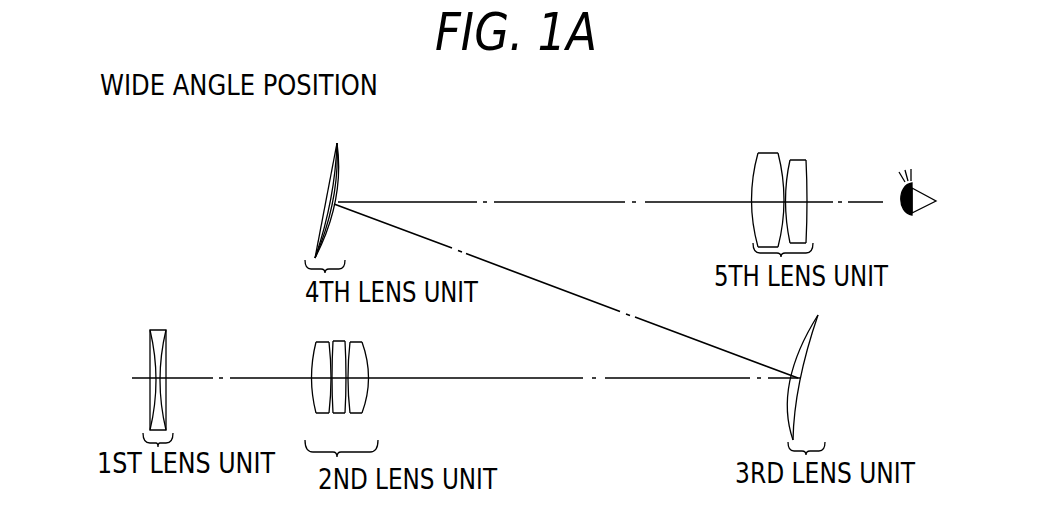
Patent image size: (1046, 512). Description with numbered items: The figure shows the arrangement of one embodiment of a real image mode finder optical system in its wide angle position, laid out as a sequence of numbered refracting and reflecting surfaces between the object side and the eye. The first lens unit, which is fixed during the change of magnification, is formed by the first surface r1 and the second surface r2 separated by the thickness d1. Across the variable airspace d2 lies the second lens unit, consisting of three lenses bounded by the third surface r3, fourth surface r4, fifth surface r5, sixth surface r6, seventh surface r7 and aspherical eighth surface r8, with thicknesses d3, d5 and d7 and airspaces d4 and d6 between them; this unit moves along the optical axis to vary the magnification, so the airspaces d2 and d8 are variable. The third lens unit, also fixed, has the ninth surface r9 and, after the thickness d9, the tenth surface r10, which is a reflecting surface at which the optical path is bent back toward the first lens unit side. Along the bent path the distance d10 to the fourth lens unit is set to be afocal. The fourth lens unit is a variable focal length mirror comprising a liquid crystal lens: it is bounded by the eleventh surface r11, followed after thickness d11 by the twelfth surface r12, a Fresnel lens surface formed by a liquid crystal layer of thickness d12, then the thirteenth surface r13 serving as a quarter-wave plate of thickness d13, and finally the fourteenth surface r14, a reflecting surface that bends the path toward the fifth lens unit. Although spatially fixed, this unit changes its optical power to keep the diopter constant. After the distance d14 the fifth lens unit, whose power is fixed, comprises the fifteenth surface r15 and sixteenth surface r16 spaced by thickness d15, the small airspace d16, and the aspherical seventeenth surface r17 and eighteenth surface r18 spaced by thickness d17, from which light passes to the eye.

The first surface r1 is at (150, 357).
The second surface r2 is at (167, 353).
The third surface r3 is at (312, 370).
The fourth surface r4 is at (328, 362).
The fifth surface r5 is at (336, 348).
The sixth surface r6 is at (348, 355).
The seventh surface r7 is at (360, 357).
The eighth surface r8 is at (373, 367).
The ninth surface r9 is at (802, 343).
The tenth surface r10 is at (811, 357).
The eleventh surface r11 is at (337, 188).
The twelfth surface r12 is at (338, 164).
The thirteenth surface r13 is at (333, 165).
The fourteenth surface r14 is at (333, 166).
The fifteenth surface r15 is at (755, 176).
The sixteenth surface r16 is at (781, 180).
The seventeenth surface r17 is at (789, 178).
The eighteenth surface r18 is at (804, 188).
The axial thickness of first lens unit d1 is at (157, 385).
The variable airspace between first and second lens units d2 is at (204, 380).
The axial thickness of first lens of second lens unit d3 is at (316, 387).
The airspace within second lens unit d4 is at (329, 390).
The axial thickness of second lens of second lens unit d5 is at (339, 390).
The airspace within second lens unit d6 is at (351, 400).
The axial thickness of third lens of second lens unit d7 is at (370, 390).
The variable airspace between second and third lens units d8 is at (548, 377).
The axial thickness of third lens unit d9 is at (800, 384).
The airspace between third and fourth lens units d10 is at (597, 303).
The axial thickness of first element of fourth lens unit d11 is at (332, 213).
The thickness of liquid crystal layer d12 is at (321, 206).
The thickness of quarter-wave plate d13 is at (323, 202).
The airspace between fourth and fifth lens units d14 is at (595, 200).
The axial thickness of first lens of fifth lens unit d15 is at (755, 207).
The airspace within fifth lens unit d16 is at (800, 210).
The axial thickness of second lens of fifth lens unit d17 is at (807, 211).